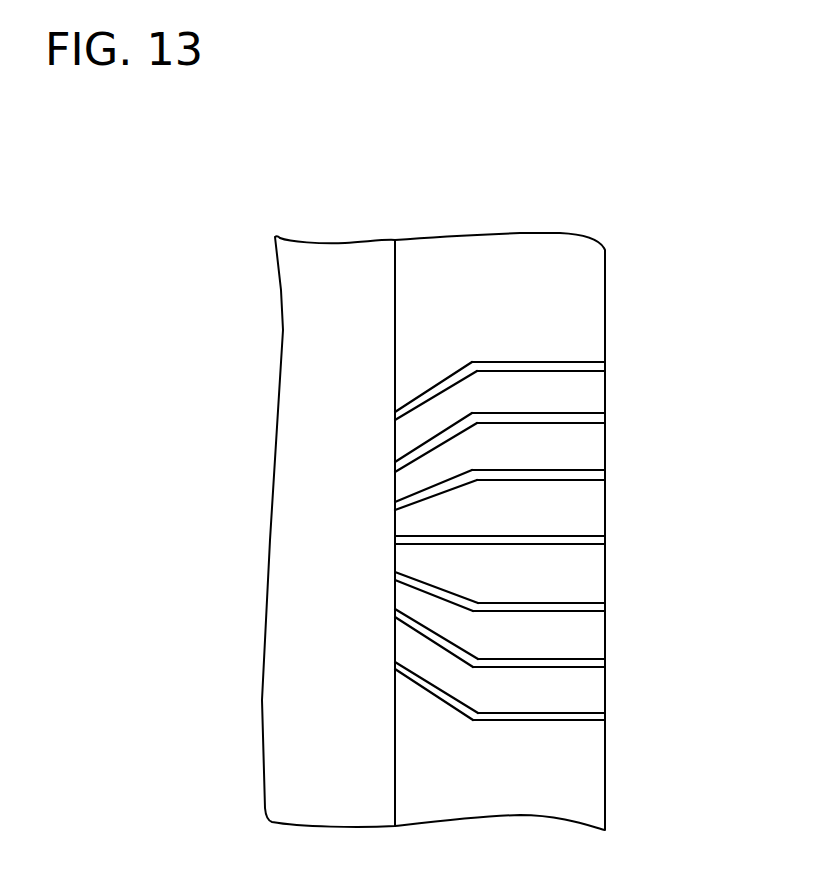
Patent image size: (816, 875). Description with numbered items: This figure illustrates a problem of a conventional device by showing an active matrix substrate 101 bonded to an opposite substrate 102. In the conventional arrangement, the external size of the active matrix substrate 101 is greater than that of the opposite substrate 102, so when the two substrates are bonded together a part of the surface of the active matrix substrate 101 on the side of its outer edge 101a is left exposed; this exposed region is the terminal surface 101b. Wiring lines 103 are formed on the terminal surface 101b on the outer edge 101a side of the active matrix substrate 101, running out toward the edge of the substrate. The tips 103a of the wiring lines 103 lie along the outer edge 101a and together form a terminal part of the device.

The active matrix substrate 101 is at (444, 238).
The outer edge 101a is at (608, 285).
The terminal surface 101b is at (539, 260).
The opposite substrate 102 is at (341, 240).
The wiring lines 103 is at (395, 413).
The tips of the wiring lines 103a is at (605, 366).